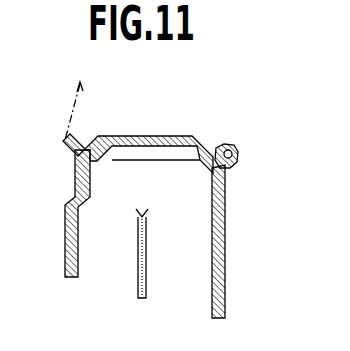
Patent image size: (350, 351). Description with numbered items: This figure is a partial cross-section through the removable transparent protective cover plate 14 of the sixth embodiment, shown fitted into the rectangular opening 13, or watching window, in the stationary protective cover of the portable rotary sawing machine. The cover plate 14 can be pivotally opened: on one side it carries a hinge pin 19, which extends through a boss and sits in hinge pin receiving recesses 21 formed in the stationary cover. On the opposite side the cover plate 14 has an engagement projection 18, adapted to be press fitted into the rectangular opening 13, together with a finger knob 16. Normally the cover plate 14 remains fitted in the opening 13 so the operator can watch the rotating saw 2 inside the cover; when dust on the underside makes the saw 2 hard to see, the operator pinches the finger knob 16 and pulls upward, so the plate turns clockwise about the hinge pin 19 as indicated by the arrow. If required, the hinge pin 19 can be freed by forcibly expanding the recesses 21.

The rotating saw 2 is at (148, 266).
The rectangular opening 13 is at (154, 163).
The transparent protective cover plate 14 is at (125, 136).
The finger knob 16 is at (67, 147).
The engagement projection 18 is at (95, 163).
The hinge pin 19 is at (227, 176).
The hinge pin receiving recesses 21 is at (239, 157).